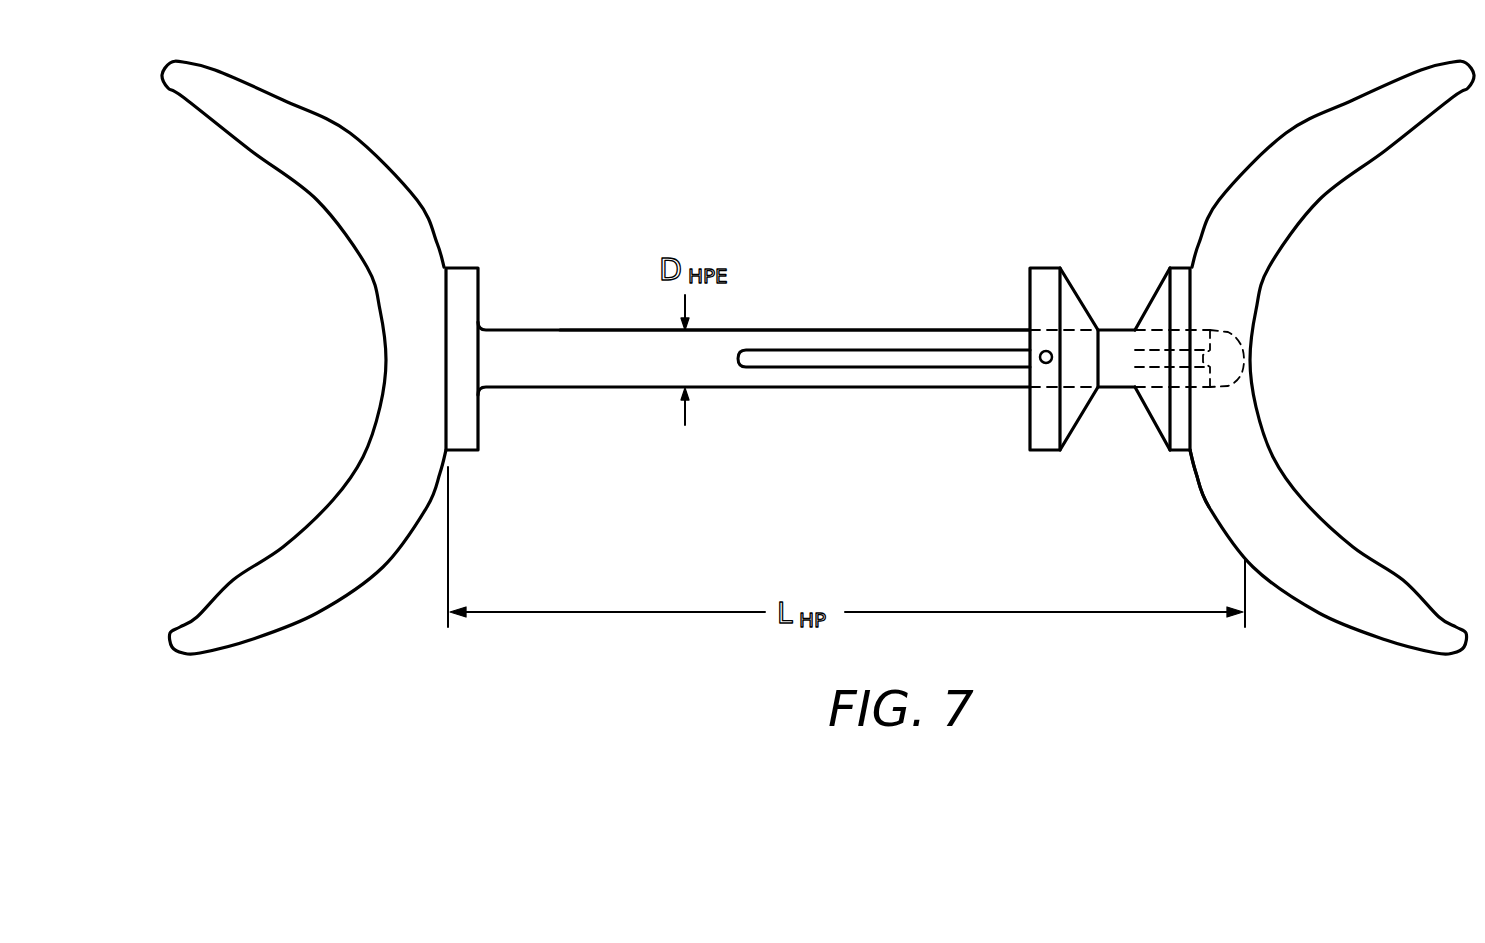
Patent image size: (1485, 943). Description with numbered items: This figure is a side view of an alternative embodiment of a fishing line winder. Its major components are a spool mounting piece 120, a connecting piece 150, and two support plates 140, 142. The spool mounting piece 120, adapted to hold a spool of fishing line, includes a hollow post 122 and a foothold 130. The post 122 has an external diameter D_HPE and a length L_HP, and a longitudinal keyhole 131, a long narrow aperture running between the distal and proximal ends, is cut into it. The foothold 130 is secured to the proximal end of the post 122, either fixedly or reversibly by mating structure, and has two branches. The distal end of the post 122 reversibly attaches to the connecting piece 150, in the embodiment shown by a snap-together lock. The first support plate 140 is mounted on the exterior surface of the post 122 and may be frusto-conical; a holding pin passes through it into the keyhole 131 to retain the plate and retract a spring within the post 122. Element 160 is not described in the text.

The spool mounting piece 120 is at (586, 392).
The hollow post 122 is at (566, 331).
The foothold 130 is at (346, 148).
The keyhole aperture 131 is at (787, 363).
The first support plate 140 is at (1043, 452).
The second support plate 142 is at (1183, 452).
The connecting piece 150 is at (1220, 532).
The second handle 160 is at (1276, 159).